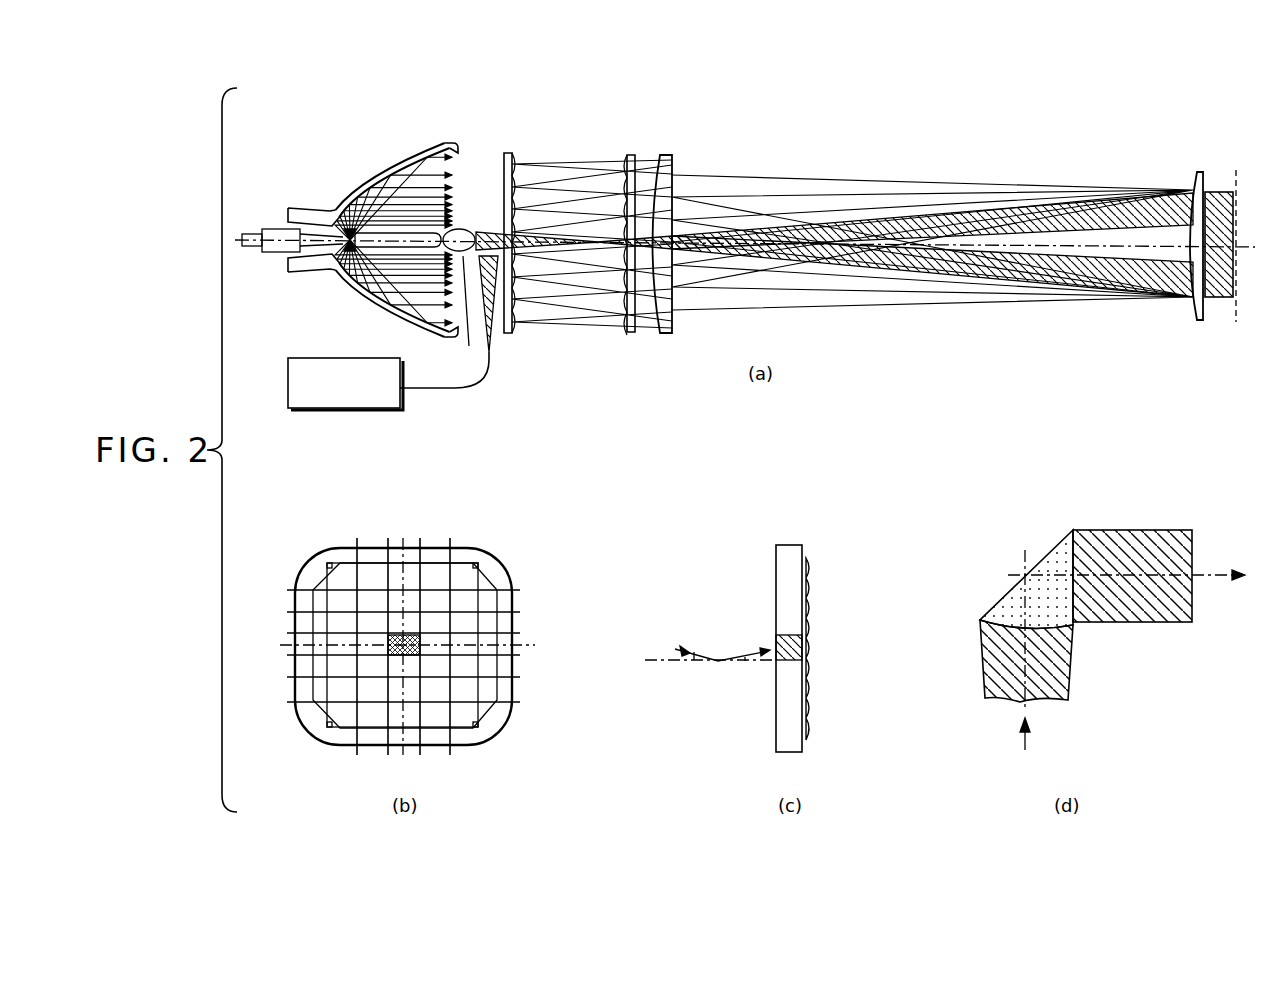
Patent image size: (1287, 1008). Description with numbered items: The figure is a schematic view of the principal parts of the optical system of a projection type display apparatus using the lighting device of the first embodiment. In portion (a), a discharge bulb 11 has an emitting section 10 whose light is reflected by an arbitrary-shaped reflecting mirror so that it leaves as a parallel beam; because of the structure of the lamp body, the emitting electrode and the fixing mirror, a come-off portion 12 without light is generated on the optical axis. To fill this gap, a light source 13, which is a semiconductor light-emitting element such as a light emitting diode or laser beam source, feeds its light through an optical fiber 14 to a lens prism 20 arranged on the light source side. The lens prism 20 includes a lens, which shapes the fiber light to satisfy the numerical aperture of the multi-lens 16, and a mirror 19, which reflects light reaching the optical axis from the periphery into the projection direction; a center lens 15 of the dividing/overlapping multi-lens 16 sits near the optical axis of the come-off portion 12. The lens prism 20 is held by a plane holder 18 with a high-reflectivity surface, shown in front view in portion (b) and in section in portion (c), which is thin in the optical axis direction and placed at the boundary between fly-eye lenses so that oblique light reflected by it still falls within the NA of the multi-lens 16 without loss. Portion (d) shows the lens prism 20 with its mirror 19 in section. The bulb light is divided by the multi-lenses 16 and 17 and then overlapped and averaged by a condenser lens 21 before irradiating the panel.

The emitting section 10 is at (337, 213).
The discharge bulb 11 is at (444, 146).
The come-off portion 12 is at (457, 313).
The light source 13 is at (363, 410).
The optical fiber 14 is at (465, 391).
The center lens 15 is at (515, 235).
The multi-lens 16 is at (507, 153).
The multi-lens 17 is at (629, 158).
The plane holder 18 is at (500, 645).
The mirror 19 is at (1010, 603).
The lens prism 20 is at (499, 237).
The condenser lens 21 is at (663, 158).